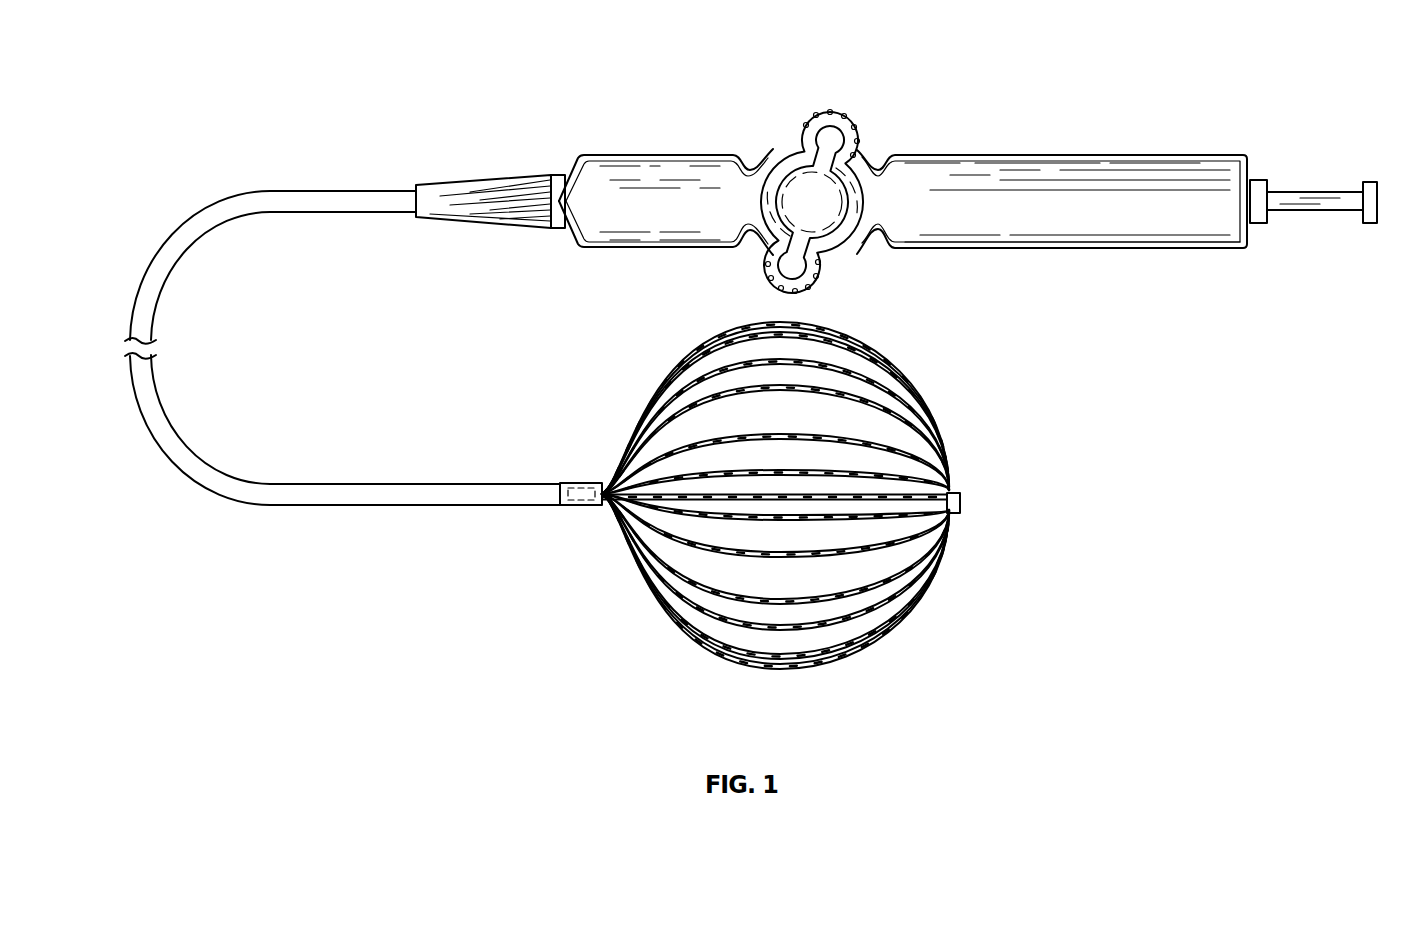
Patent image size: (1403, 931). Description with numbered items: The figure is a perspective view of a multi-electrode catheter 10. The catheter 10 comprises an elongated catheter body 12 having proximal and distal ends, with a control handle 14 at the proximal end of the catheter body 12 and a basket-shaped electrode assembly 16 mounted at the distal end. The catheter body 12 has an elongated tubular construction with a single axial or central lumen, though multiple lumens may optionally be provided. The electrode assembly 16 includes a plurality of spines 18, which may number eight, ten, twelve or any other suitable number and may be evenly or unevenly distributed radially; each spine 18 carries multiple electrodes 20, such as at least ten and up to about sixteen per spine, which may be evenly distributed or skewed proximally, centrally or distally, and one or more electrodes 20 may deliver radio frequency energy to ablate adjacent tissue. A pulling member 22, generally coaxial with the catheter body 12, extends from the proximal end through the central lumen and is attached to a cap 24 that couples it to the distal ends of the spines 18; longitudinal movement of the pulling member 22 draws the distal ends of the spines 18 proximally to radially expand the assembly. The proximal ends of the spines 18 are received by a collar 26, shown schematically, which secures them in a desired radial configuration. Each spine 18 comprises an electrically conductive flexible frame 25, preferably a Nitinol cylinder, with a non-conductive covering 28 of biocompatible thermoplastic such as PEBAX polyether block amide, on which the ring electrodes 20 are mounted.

The catheter 10 is at (388, 104).
The catheter body 12 is at (222, 195).
The control handle 14 is at (1047, 249).
The basket-shaped electrode assembly 16 is at (597, 345).
The spine 18 is at (897, 637).
The electrode 20 is at (858, 663).
The pulling member 22 is at (888, 503).
The cap 24 is at (952, 520).
The flexible frame 25 is at (735, 600).
The collar 26 is at (582, 505).
The non-conductive covering 28 is at (922, 594).